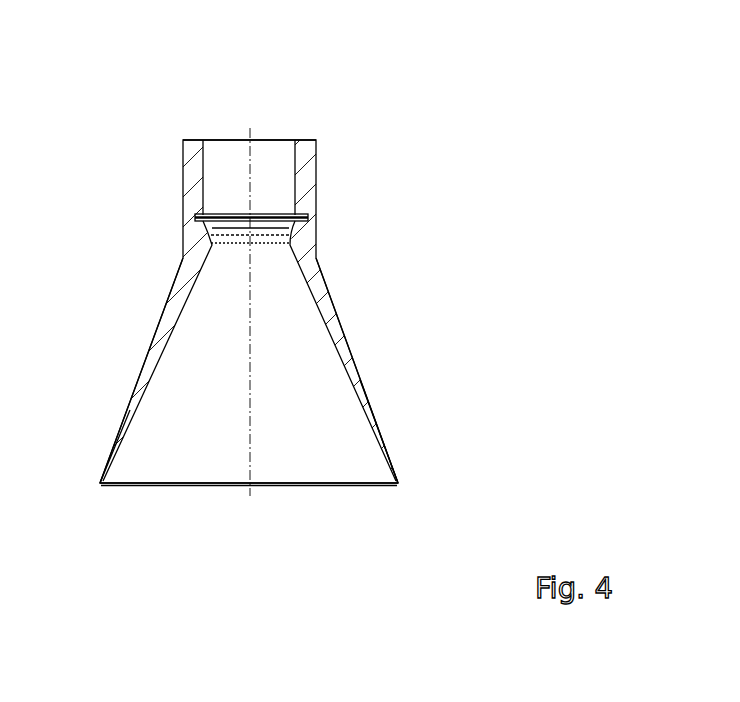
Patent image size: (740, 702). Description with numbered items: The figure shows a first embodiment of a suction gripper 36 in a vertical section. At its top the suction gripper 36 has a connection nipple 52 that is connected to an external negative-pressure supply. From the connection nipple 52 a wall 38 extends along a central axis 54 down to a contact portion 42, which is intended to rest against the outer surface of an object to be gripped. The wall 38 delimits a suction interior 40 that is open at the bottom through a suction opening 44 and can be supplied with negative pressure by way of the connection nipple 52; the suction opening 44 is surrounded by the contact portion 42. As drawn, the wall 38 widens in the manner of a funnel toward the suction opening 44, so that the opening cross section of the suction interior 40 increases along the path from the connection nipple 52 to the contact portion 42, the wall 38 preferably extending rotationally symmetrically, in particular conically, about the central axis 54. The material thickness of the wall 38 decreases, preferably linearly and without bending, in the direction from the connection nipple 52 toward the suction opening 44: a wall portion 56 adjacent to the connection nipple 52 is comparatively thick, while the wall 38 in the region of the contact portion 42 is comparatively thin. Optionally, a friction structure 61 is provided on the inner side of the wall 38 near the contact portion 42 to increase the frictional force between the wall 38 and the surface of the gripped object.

The suction gripper 36 is at (400, 286).
The connection nipple 52 is at (334, 178).
The central axis 54 is at (250, 140).
The wall portion 56 is at (340, 280).
The wall 38 is at (341, 331).
The suction interior 40 is at (230, 409).
The contact portion 42 is at (406, 453).
The suction opening 44 is at (179, 486).
The friction structure 61 is at (121, 457).